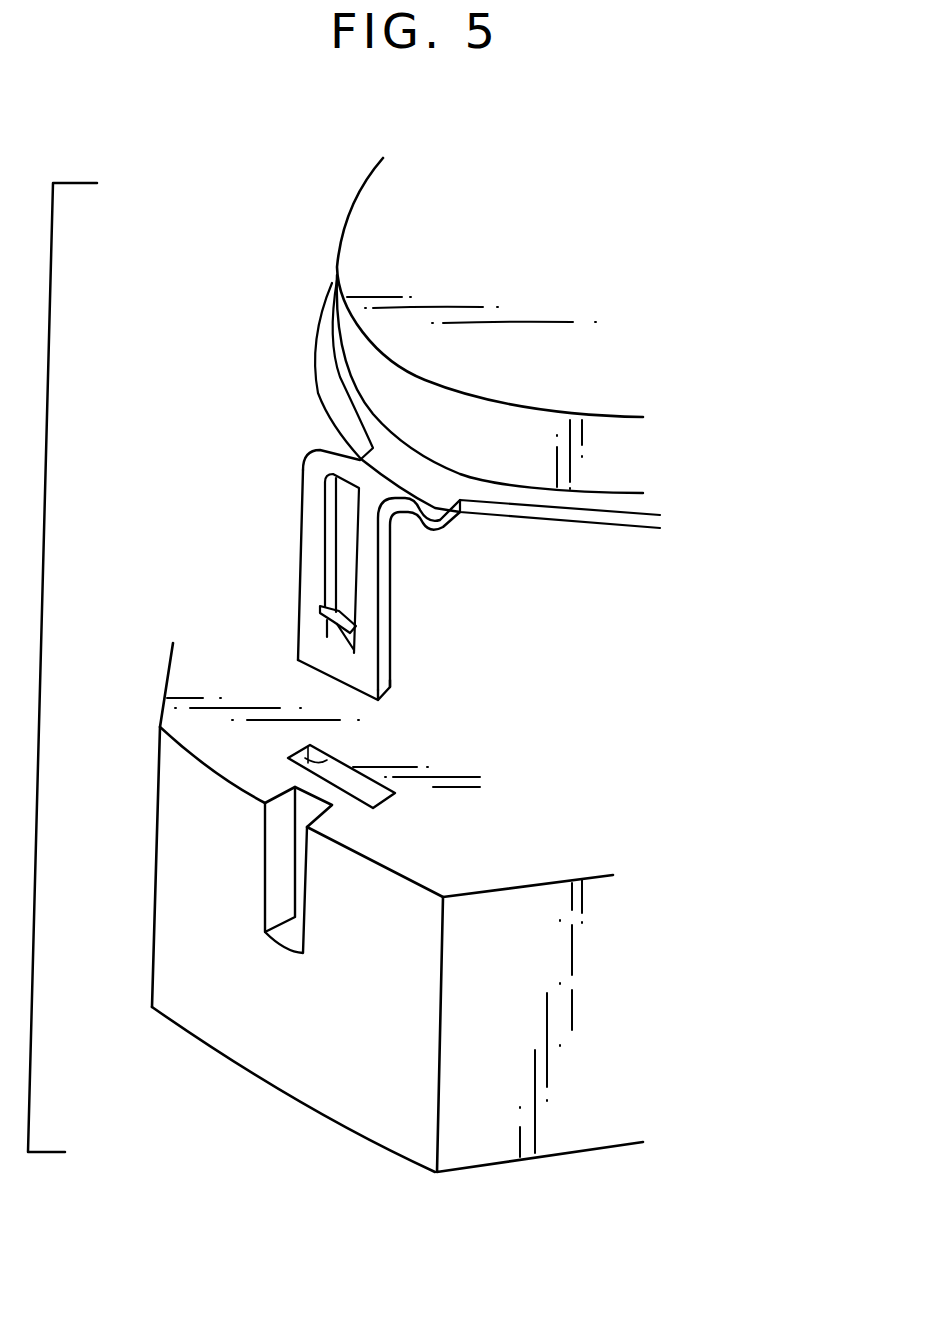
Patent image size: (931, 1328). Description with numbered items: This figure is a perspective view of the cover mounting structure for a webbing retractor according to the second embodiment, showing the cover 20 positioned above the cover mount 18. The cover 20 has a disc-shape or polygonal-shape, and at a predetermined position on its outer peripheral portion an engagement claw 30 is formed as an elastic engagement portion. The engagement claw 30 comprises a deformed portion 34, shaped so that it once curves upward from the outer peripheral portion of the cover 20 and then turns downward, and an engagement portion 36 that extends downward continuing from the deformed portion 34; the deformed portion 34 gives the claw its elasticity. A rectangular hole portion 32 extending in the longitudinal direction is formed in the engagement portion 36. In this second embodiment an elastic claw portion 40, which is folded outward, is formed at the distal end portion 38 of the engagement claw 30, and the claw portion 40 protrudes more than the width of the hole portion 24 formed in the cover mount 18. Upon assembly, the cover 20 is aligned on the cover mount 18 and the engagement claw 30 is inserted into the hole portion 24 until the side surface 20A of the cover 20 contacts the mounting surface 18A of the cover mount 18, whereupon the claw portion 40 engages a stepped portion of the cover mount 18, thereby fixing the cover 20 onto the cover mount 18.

The cover mount 18 is at (354, 907).
The mounting surface 18A is at (490, 876).
The cover 20 is at (362, 246).
The side surface 20A is at (538, 464).
The hole portion 24 is at (312, 762).
The engagement claw 30 is at (339, 574).
The hole portion 32 is at (343, 572).
The deformed portion 34 is at (318, 447).
The engagement portion 36 is at (371, 537).
The distal end portion 38 is at (346, 671).
The elastic claw portion 40 is at (325, 625).